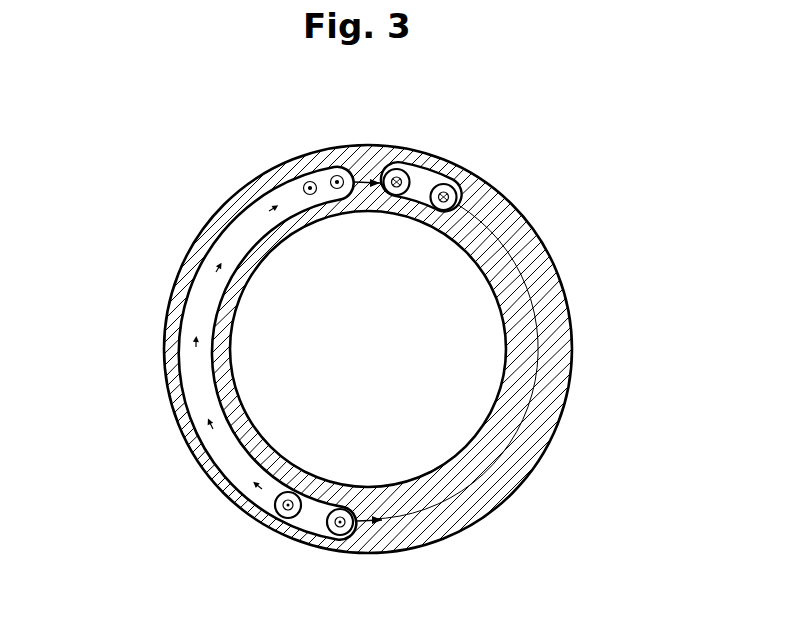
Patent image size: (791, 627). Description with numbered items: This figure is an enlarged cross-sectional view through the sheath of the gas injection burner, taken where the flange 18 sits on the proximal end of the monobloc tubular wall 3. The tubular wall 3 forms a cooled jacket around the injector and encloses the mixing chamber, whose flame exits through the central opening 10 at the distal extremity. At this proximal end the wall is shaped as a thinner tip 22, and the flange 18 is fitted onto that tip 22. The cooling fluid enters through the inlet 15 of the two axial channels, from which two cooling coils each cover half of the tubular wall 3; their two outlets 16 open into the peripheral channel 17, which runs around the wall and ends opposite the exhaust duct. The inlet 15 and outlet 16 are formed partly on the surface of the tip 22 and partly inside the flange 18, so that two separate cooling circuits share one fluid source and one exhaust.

The monobloc tubular wall 3 is at (553, 265).
The opening 10 is at (389, 362).
The inlet 15 is at (446, 179).
The outlet 16 is at (328, 532).
The peripheral channel 17 is at (195, 379).
The flange 18 is at (490, 212).
The thinner tip 22 is at (517, 323).